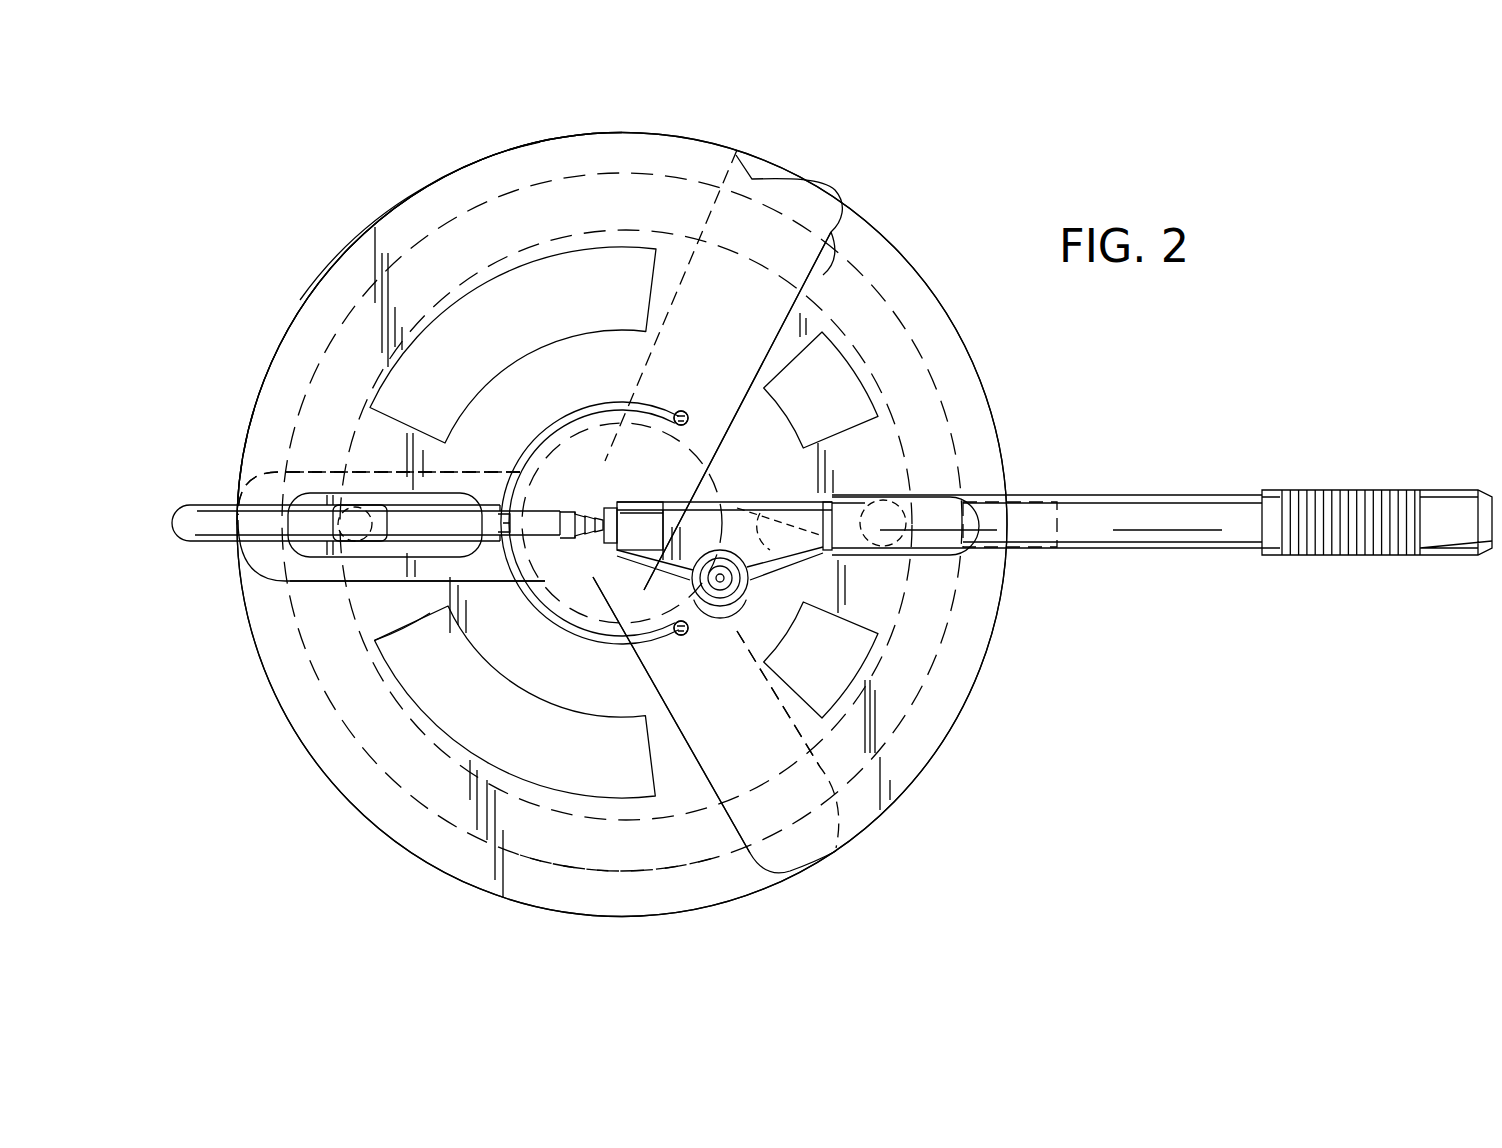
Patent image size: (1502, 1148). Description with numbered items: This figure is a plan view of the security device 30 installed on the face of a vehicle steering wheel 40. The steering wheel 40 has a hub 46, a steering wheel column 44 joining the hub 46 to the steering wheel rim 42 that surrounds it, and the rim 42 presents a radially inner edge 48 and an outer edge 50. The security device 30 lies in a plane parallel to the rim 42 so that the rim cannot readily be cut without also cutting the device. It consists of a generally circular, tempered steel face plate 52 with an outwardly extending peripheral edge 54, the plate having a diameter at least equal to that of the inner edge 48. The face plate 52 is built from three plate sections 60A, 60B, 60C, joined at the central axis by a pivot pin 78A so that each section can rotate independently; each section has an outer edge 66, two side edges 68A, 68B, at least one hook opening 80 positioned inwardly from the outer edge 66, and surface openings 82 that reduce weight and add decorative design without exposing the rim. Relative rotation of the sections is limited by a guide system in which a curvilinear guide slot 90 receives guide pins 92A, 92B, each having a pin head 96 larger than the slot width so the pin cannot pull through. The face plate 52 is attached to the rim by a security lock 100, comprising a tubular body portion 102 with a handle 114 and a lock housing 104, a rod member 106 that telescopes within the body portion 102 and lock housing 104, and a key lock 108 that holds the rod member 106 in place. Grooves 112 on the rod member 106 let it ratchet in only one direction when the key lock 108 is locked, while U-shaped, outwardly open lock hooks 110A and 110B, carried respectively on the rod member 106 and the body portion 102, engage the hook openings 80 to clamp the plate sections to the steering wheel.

The security device 30 is at (897, 198).
The steering wheel 40 is at (332, 320).
The steering wheel rim 42 is at (447, 226).
The steering wheel column 44 is at (403, 630).
The hub 46 is at (582, 425).
The inner edge 48 is at (688, 820).
The outer edge 50 is at (570, 868).
The face plate 52 is at (370, 222).
The peripheral edge 54 is at (488, 162).
The plate section 60A is at (285, 350).
The plate section 60B is at (930, 298).
The plate section 60C is at (746, 886).
The outer edge 66 is at (637, 130).
The side edge 68A is at (736, 155).
The side edge 68B is at (838, 270).
The pivot pin 78A is at (632, 500).
The hook opening 80 is at (437, 490).
The surface opening 82 is at (612, 256).
The guide slot 90 is at (548, 430).
The guide pin 92A is at (684, 409).
The guide pin 92B is at (684, 638).
The pin head 96 is at (690, 413).
The security lock 100 is at (746, 500).
The body portion 102 is at (1160, 540).
The lock housing 104 is at (667, 518).
The rod member 106 is at (427, 532).
The key lock 108 is at (746, 579).
The lock hook 110A is at (353, 497).
The lock hook 110B is at (1033, 510).
The grooves 112 is at (588, 535).
The handle 114 is at (1332, 500).